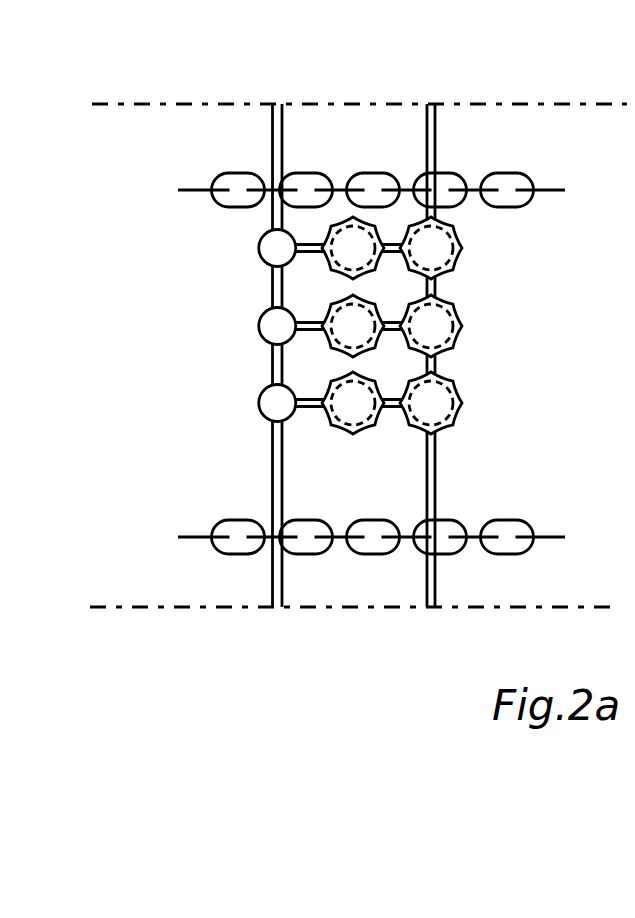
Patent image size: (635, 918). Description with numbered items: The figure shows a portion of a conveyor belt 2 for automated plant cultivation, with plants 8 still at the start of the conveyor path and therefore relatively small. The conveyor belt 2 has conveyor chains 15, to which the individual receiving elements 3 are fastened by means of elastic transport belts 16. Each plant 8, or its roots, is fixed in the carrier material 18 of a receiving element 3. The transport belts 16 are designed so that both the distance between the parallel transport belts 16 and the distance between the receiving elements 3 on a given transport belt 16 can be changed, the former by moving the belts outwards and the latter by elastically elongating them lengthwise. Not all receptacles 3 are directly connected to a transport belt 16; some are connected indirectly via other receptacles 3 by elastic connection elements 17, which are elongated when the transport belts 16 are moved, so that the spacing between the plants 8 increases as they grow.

The conveyor belt 2 is at (478, 148).
The receiving element 3 is at (277, 403).
The plant 8 is at (463, 254).
The conveyor chain 15 is at (525, 173).
The transport belt 16 is at (272, 472).
The elastic connection element 17 is at (314, 323).
The carrier material 18 is at (277, 327).